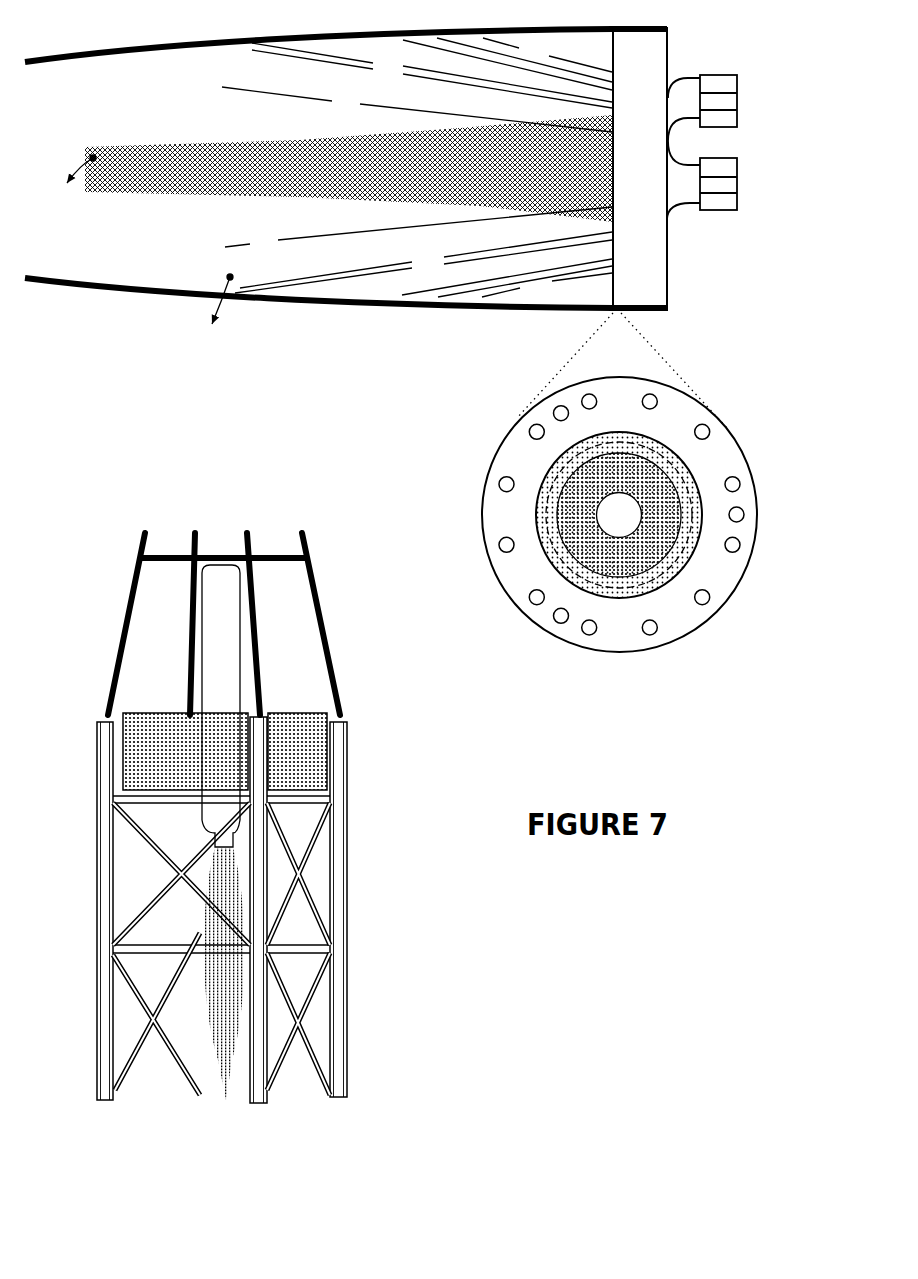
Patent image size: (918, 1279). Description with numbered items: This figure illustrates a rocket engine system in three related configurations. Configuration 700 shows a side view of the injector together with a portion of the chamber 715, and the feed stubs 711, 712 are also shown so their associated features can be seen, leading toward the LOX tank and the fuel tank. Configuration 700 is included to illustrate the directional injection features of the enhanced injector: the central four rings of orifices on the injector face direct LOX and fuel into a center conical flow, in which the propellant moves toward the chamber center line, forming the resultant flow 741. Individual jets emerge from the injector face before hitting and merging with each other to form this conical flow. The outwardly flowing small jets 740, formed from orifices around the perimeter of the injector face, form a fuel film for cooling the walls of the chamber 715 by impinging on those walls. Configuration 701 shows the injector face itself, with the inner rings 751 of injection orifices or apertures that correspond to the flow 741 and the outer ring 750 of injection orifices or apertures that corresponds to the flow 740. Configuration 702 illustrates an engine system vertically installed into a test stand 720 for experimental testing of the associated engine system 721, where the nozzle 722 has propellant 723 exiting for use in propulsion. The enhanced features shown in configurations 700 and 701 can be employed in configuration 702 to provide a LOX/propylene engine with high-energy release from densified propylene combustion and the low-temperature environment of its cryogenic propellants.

The configuration 700 is at (723, 44).
The configuration 701 is at (709, 371).
The configuration 702 is at (100, 548).
The feed stub 711 is at (684, 95).
The feed stub 712 is at (683, 185).
The chamber 715 is at (381, 313).
The test stand 720 is at (327, 614).
The engine system 721 is at (244, 683).
The nozzle 722 is at (235, 838).
The propellant 723 is at (229, 917).
The outwardly flowing small jets 740 is at (417, 167).
The resultant flow 741 is at (349, 168).
The outer ring 750 is at (627, 597).
The inner rings 751 is at (660, 548).